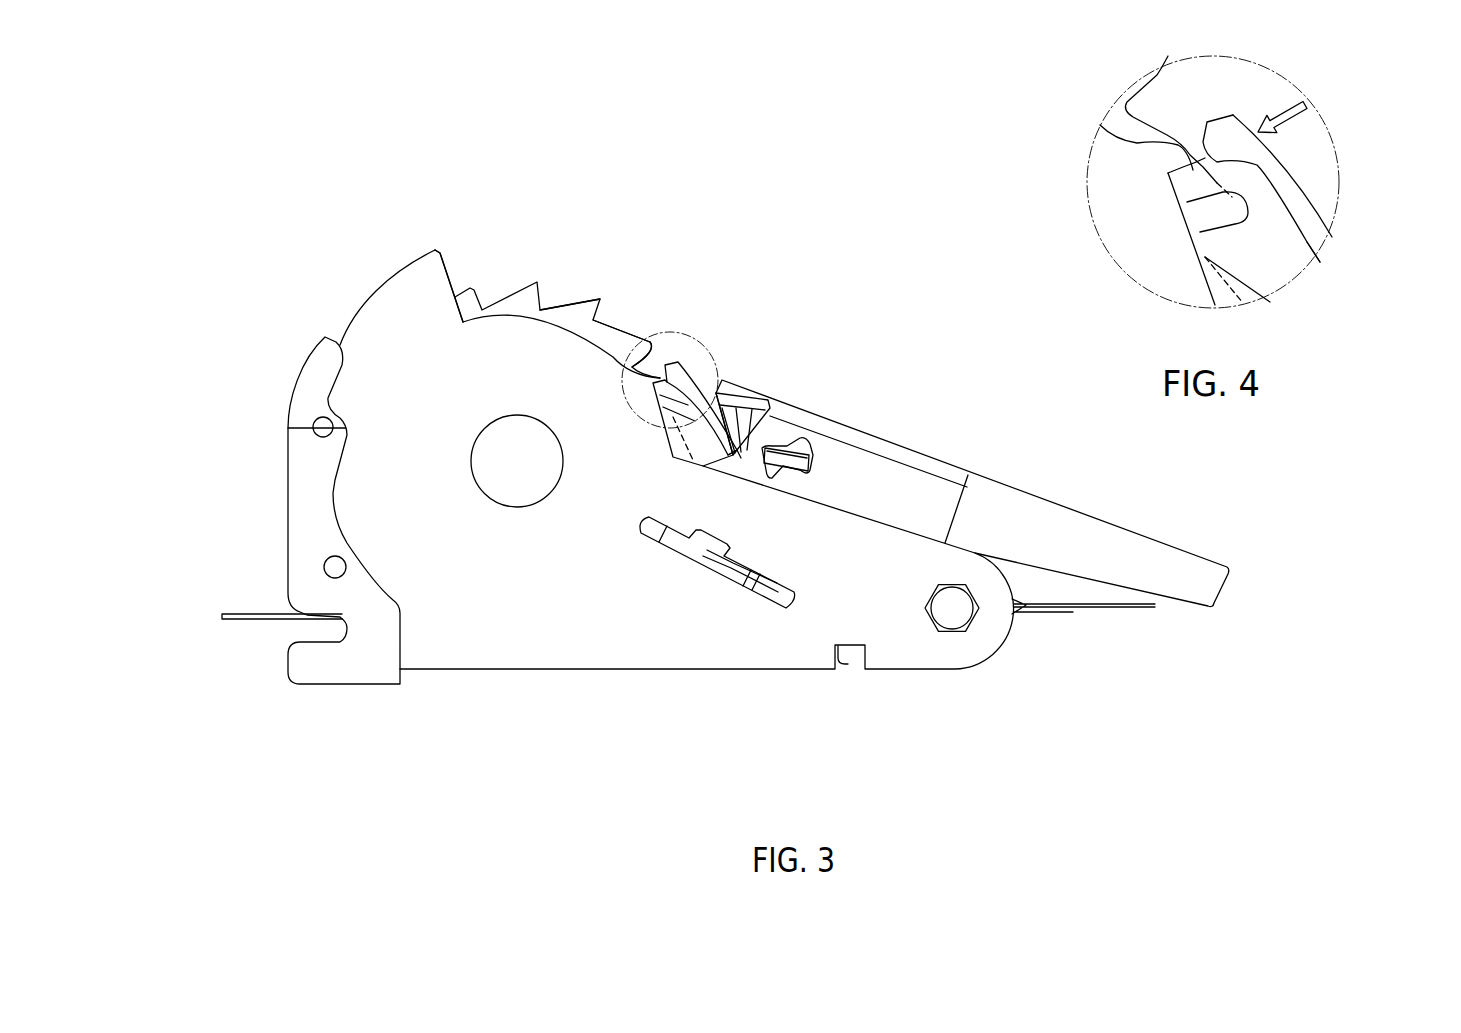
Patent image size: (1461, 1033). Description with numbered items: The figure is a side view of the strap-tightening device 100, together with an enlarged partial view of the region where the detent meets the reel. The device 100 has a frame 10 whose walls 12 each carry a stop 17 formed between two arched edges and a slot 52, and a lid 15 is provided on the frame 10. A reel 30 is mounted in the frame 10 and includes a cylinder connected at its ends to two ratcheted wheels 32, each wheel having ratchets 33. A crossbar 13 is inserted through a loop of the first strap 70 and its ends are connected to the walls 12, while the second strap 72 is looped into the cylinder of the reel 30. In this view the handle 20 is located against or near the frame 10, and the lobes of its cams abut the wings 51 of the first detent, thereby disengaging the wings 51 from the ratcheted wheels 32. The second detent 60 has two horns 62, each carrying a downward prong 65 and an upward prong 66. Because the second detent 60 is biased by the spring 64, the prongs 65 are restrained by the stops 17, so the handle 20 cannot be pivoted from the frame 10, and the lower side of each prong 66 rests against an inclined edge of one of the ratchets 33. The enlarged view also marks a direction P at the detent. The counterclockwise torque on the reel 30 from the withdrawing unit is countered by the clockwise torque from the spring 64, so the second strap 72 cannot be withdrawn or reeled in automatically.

In FIG. 3, the strap-tightening device 100 is at (272, 156).
In FIG. 3, the frame 10 is at (772, 716).
In FIG. 3, the walls 12 is at (525, 640).
In FIG. 3, the crossbar 13 is at (952, 612).
In FIG. 3, the lid 15 is at (298, 478).
In FIG. 3, the stop 17 is at (647, 370).
In FIG. 4, the stop 17 is at (1163, 157).
In FIG. 3, the handle 20 is at (1025, 505).
In FIG. 3, the reel 30 is at (478, 248).
In FIG. 3, the ratcheted wheels 32 is at (460, 305).
In FIG. 3, the ratchets 33 is at (583, 310).
In FIG. 4, the ratchets 33 is at (1215, 217).
In FIG. 3, the wings 51 is at (705, 555).
In FIG. 3, the slot 52 is at (647, 518).
In FIG. 3, the second detent 60 is at (720, 350).
In FIG. 4, the second detent 60 is at (1318, 178).
In FIG. 3, the horns 62 is at (734, 454).
In FIG. 4, the horns 62 is at (1293, 225).
In FIG. 3, the spring 64 is at (757, 400).
In FIG. 3, the prong 65 is at (658, 383).
In FIG. 4, the prong 65 is at (1190, 181).
In FIG. 3, the prong 66 is at (655, 350).
In FIG. 4, the prong 66 is at (1160, 67).
In FIG. 3, the first strap 70 is at (1105, 612).
In FIG. 3, the second strap 72 is at (252, 612).
In FIG. 4, the pressing direction P is at (1277, 105).